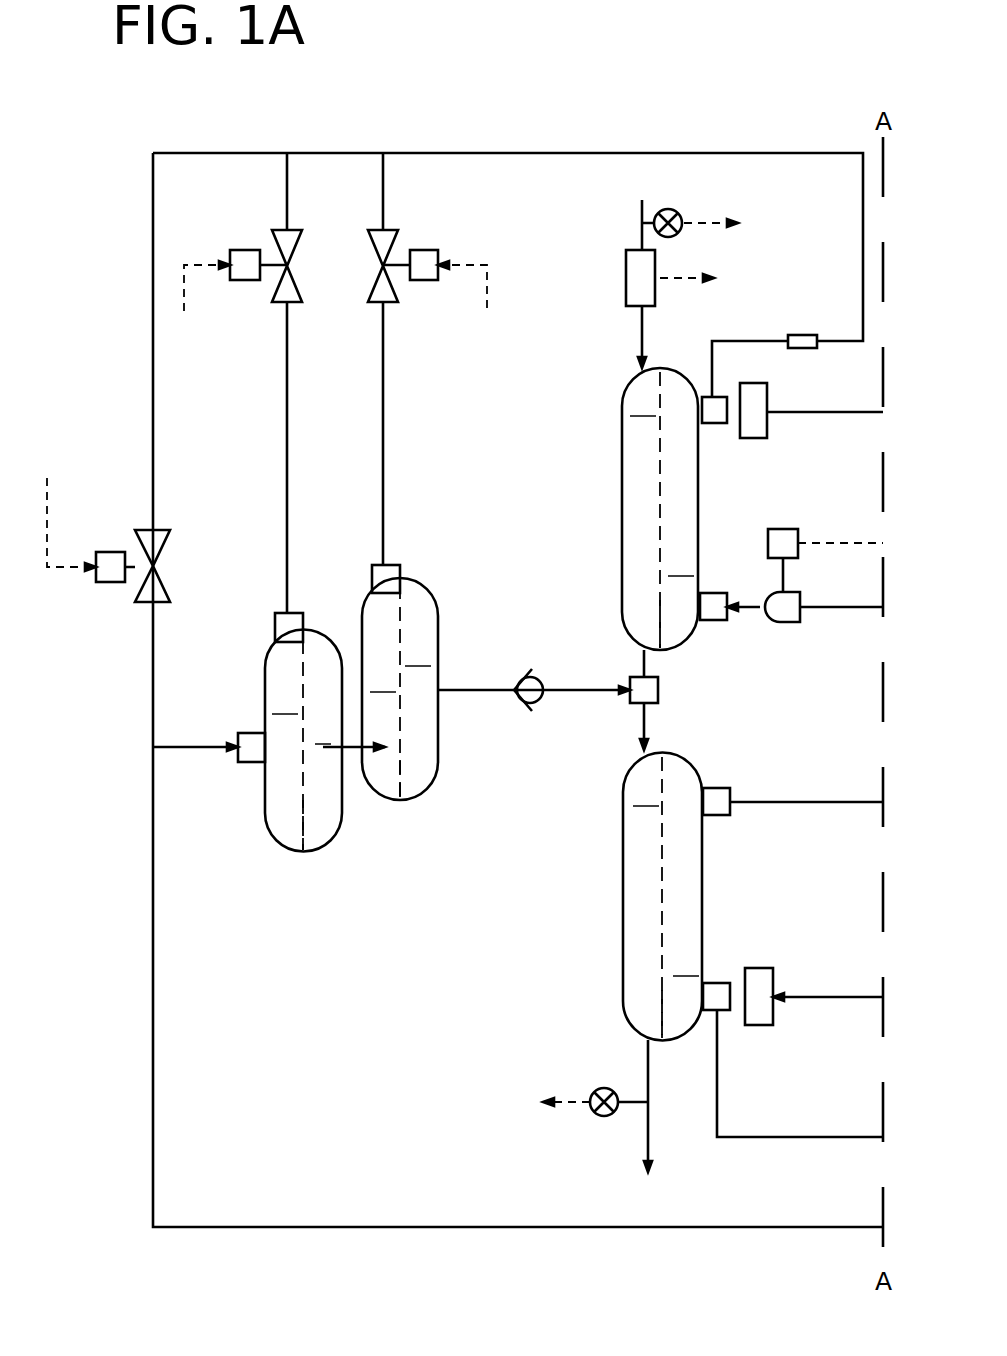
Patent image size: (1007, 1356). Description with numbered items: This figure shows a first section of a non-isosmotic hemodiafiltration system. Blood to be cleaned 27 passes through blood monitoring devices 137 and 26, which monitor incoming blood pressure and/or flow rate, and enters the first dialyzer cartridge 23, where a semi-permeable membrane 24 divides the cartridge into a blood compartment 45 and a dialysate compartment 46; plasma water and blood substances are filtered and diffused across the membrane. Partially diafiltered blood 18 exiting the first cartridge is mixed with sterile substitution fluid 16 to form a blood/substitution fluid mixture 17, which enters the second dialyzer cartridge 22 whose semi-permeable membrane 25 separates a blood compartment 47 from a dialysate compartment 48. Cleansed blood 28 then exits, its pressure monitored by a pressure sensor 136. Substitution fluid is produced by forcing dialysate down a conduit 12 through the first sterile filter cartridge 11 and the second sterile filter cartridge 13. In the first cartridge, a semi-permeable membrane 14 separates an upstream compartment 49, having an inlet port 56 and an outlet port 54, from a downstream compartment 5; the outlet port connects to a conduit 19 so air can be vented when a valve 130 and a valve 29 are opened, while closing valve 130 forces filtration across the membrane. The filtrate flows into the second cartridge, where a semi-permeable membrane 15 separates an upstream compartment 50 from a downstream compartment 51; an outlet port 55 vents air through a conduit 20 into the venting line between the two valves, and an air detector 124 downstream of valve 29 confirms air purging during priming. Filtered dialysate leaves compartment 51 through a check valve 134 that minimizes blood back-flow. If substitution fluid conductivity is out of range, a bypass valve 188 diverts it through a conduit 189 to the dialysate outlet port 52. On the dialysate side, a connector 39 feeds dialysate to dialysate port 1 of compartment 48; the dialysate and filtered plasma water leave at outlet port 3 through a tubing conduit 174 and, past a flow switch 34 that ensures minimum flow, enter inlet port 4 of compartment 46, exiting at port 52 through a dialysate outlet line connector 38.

The dialysate port 1 is at (715, 983).
The outlet port 3 is at (710, 788).
The inlet port 4 is at (712, 593).
The downstream compartment 5 is at (350, 734).
The first sterile filter cartridge 11 is at (262, 822).
The conduit 12 is at (153, 1003).
The second sterile filter cartridge 13 is at (400, 818).
The semi-permeable membrane 14 is at (303, 840).
The semi-permeable membrane 15 is at (420, 785).
The sterile substitution fluid 16 is at (565, 690).
The blood/substitution fluid mixture 17 is at (635, 705).
The partially diafiltered blood 18 is at (640, 677).
The conduit 19 is at (287, 420).
The conduit 20 is at (383, 462).
The second dialyzer cartridge 22 is at (623, 865).
The first dialyzer cartridge 23 is at (622, 542).
The semi-permeable membrane 24 is at (665, 625).
The semi-permeable membrane 25 is at (665, 1040).
The blood monitoring device 26 is at (626, 272).
The blood to be cleaned 27 is at (642, 215).
The cleansed blood 28 is at (648, 1060).
The valve 29 is at (440, 250).
The flow switch 34 is at (783, 529).
The dialysate outlet line connector 38 is at (768, 395).
The connector 39 is at (775, 978).
The blood compartment 45 is at (646, 403).
The dialysate compartment 46 is at (684, 563).
The blood compartment 47 is at (649, 793).
The dialysate compartment 48 is at (689, 963).
The upstream compartment 49 is at (288, 701).
The upstream compartment 50 is at (386, 679).
The downstream compartment 51 is at (421, 653).
The dialysate outlet port 52 is at (708, 397).
The outlet port 54 is at (275, 622).
The outlet port 55 is at (400, 568).
The inlet port 56 is at (238, 740).
The air detector 124 is at (795, 335).
The valve 130 is at (235, 251).
The check valve 134 is at (530, 712).
The pressure sensor 136 is at (590, 1115).
The blood monitoring device 137 is at (679, 211).
The tubing conduit 174 is at (845, 802).
The bypass valve 188 is at (112, 583).
The conduit 189 is at (153, 313).